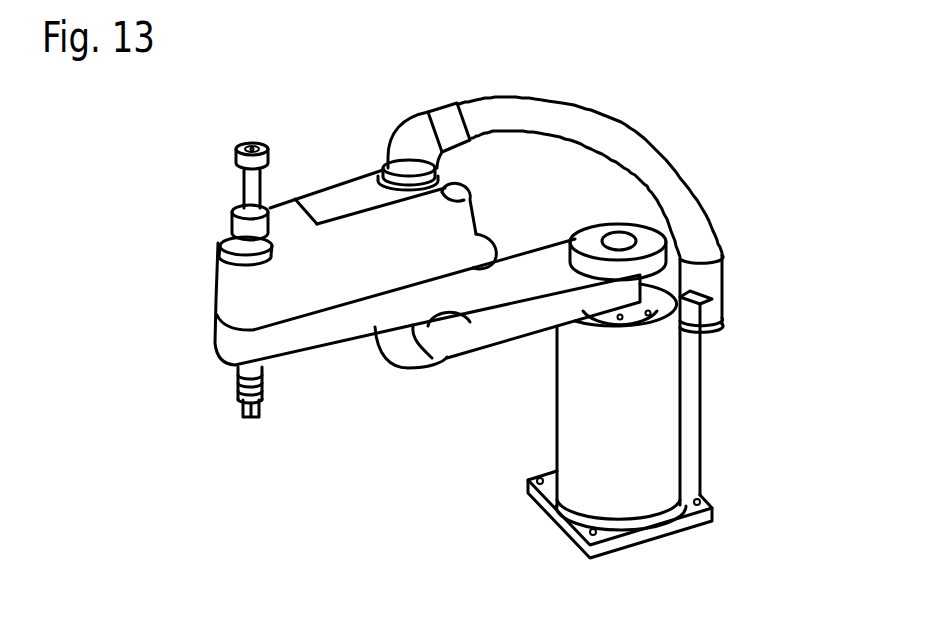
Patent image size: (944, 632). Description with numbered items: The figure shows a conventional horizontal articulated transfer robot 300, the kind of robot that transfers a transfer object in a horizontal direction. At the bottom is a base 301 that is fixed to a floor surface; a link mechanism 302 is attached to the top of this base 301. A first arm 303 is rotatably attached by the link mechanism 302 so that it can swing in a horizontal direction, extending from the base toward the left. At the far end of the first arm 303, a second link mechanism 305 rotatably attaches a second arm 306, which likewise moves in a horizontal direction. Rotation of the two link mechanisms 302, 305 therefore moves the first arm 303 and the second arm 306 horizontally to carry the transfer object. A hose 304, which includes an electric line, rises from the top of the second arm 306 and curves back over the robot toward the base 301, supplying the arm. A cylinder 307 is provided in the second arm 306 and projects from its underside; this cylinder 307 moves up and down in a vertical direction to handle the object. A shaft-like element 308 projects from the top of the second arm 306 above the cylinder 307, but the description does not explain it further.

The horizontal articulated robot 300 is at (848, 70).
The base 301 is at (662, 422).
The link mechanism 302 is at (617, 242).
The first arm 303 is at (510, 290).
The hose 304 is at (600, 133).
The link mechanism 305 is at (417, 335).
The second arm 306 is at (323, 292).
The cylinder 307 is at (258, 420).
The shaft / bolt 308 is at (248, 189).